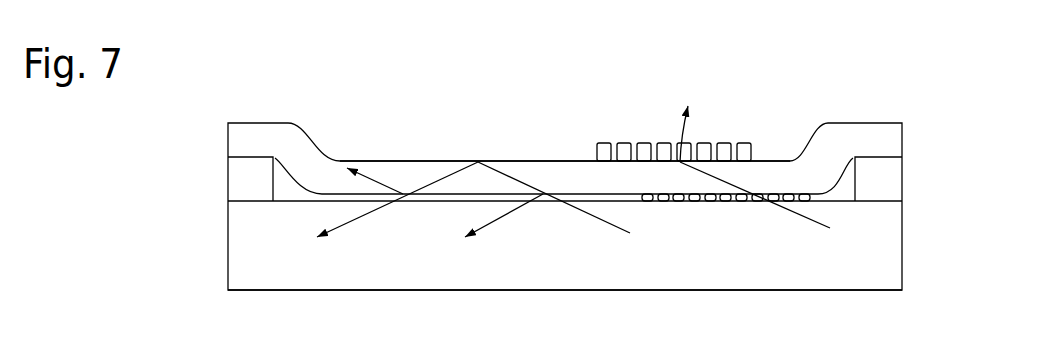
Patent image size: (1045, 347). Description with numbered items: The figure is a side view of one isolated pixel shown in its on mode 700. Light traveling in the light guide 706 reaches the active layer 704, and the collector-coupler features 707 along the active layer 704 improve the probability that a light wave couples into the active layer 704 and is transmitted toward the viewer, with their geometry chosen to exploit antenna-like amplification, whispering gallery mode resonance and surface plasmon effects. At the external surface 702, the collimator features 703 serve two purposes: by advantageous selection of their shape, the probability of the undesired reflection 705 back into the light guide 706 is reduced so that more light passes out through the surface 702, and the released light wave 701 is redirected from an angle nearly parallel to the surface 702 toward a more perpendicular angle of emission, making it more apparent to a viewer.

The on mode 700 is at (503, 206).
The released light wave 701 is at (751, 148).
The external surface 702 is at (553, 161).
The collimator features 703 is at (742, 152).
The active layer 704 is at (570, 179).
The undesired reflection 705 is at (434, 182).
The light guide 706 is at (565, 245).
The collector-coupler features 707 is at (678, 202).